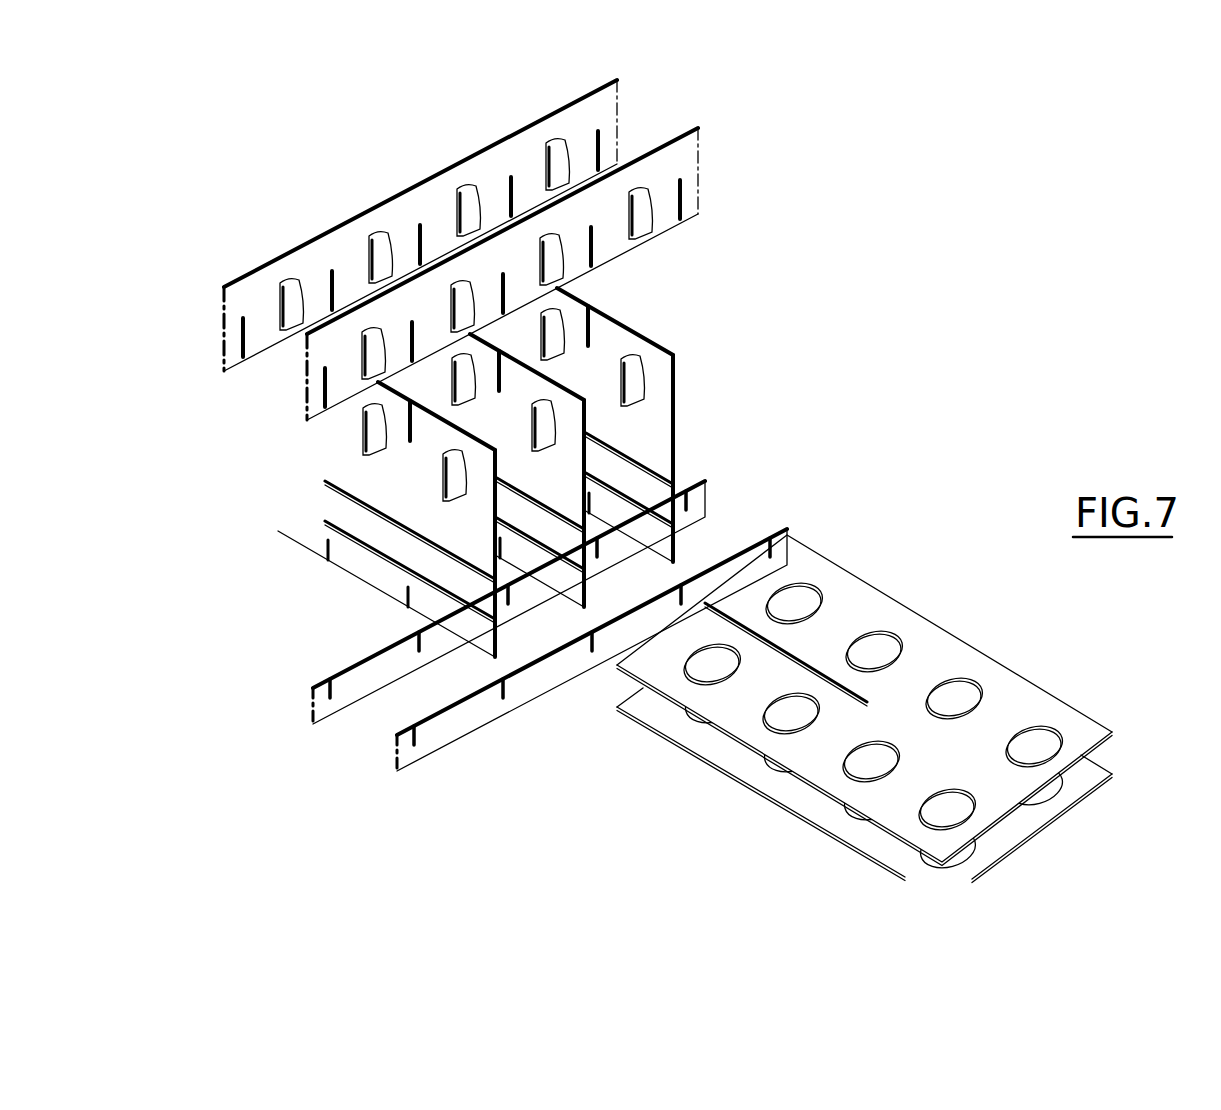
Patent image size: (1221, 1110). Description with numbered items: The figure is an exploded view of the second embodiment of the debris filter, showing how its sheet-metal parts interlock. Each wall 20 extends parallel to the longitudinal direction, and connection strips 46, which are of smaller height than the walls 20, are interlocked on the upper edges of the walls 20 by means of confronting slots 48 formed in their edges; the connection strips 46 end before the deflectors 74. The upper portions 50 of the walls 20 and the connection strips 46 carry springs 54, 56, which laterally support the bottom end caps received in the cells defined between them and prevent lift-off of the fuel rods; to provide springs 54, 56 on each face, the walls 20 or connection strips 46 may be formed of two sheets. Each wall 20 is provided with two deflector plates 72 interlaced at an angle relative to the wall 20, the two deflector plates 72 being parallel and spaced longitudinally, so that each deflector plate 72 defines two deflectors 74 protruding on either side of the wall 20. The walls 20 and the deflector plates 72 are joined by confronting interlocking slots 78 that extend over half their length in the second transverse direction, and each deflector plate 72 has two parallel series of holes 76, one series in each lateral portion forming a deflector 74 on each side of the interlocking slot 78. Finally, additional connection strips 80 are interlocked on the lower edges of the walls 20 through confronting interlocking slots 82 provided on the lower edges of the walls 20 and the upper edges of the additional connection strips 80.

The wall 20 is at (495, 527).
The connection strip 46 is at (605, 103).
The slot 48 is at (417, 365).
The upper portion 50 is at (658, 360).
The spring 54 is at (543, 318).
The spring 56 is at (556, 162).
The deflector plate 72 is at (1112, 722).
The deflector 74 is at (1092, 770).
The hole 76 is at (777, 713).
The interlocking slot 78 is at (337, 490).
The additional connection strip 80 is at (386, 743).
The interlocking slot 82 is at (420, 636).